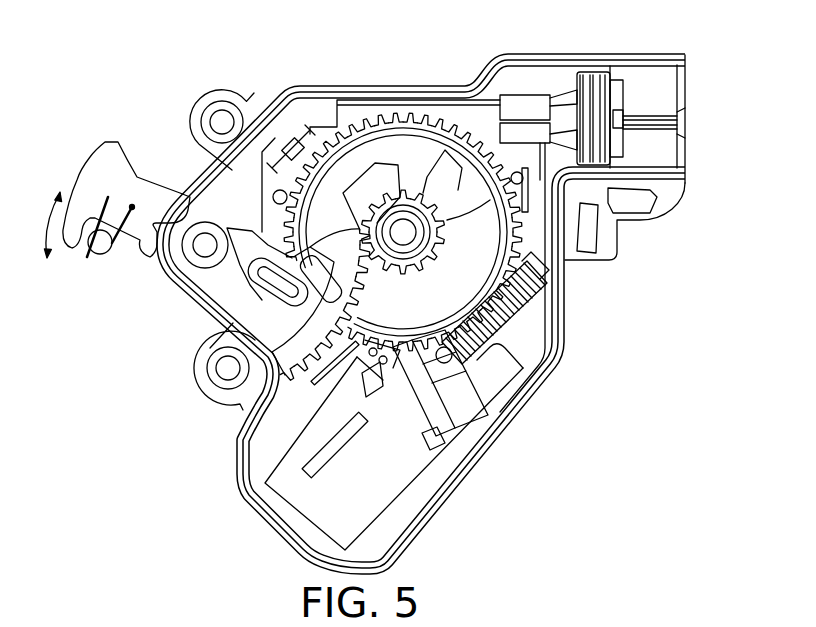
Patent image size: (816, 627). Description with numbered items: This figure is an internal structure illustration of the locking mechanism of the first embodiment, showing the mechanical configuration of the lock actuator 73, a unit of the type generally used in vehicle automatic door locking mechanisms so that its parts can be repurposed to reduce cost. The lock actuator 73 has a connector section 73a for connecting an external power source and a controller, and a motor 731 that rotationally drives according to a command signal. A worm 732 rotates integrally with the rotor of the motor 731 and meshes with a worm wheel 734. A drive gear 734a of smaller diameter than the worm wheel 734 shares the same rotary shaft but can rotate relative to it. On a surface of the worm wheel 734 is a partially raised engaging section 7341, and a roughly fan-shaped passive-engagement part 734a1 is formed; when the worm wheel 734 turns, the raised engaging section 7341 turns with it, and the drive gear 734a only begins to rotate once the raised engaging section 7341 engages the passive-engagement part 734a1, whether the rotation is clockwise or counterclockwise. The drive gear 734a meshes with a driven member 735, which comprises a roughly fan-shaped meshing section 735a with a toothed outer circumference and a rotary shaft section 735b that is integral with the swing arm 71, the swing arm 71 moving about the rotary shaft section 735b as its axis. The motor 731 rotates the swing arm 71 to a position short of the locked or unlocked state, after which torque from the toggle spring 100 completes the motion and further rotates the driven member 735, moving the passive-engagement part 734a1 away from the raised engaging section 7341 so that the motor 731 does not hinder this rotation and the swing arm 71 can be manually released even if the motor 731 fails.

The swing arm 71 is at (104, 134).
The toggle spring 100 is at (83, 258).
The lock actuator 73 is at (420, 84).
The connector section 73a is at (694, 83).
The motor 731 is at (413, 478).
The worm 732 is at (523, 296).
The worm wheel 734 is at (373, 188).
The drive gear 734a is at (452, 268).
The passive-engagement part 734a1 is at (337, 132).
The raised engaging section 7341 is at (470, 212).
The driven member 735 is at (253, 324).
The meshing section 735a is at (260, 395).
The rotary shaft section 735b is at (168, 285).